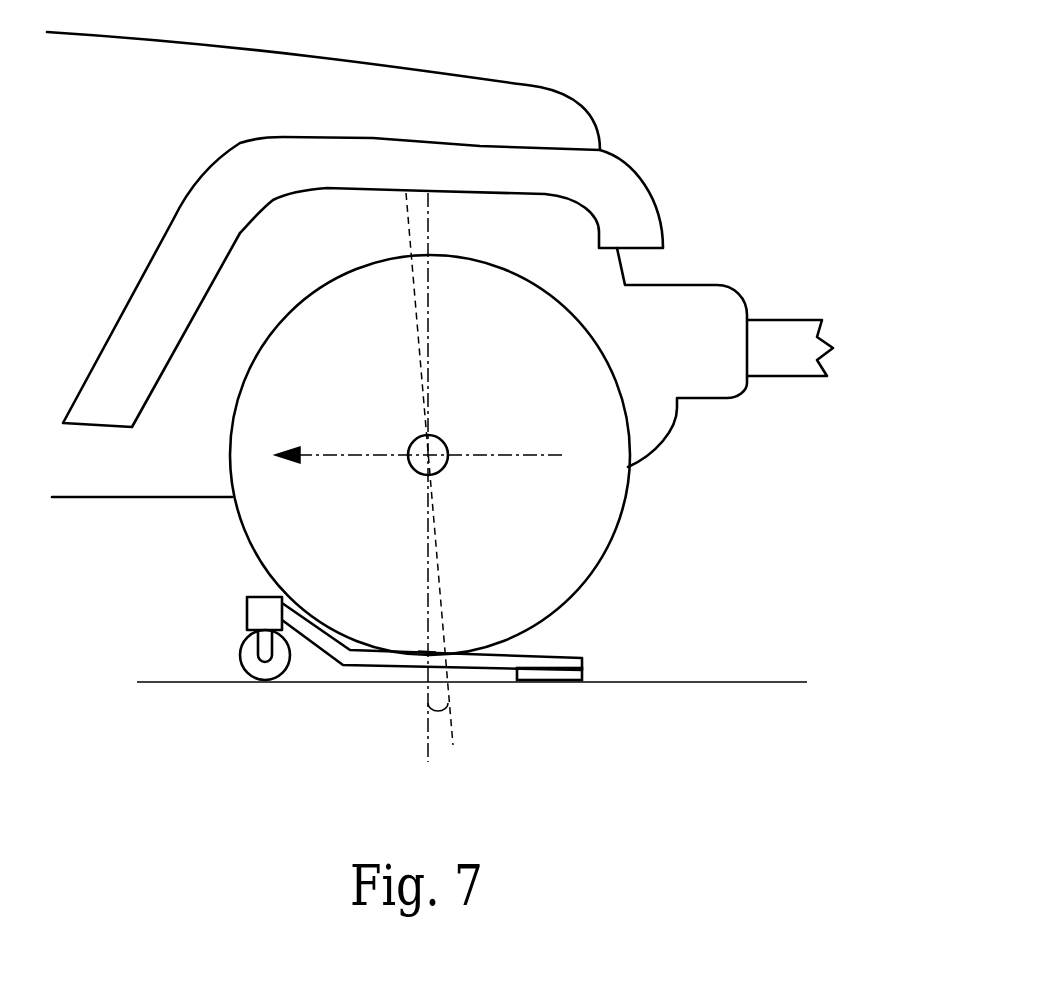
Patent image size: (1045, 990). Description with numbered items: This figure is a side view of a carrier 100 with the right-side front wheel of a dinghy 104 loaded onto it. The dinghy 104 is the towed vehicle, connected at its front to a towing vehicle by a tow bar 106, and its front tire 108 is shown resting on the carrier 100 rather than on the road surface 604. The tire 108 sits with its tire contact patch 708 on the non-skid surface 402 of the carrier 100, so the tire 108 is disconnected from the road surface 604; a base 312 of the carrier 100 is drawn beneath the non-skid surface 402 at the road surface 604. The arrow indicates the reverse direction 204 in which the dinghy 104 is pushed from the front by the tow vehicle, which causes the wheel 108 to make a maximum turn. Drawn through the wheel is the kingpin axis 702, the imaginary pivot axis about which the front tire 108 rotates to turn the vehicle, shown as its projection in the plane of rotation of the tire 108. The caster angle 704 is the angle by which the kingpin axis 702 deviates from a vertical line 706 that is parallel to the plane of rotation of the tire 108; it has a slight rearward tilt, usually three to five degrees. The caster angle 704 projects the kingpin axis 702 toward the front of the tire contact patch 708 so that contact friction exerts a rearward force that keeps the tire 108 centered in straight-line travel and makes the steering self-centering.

The carrier 100 is at (247, 613).
The dinghy 104 is at (497, 78).
The tow bar 106 is at (800, 318).
The front tire 108 is at (627, 493).
The reverse direction 204 is at (350, 455).
The base plate 312 is at (557, 683).
The non-skid surface 402 is at (557, 655).
The road surface 604 is at (712, 681).
The kingpin axis 702 is at (453, 718).
The caster angle 704 is at (437, 708).
The vertical line 706 is at (427, 573).
The tire contact patch 708 is at (423, 648).